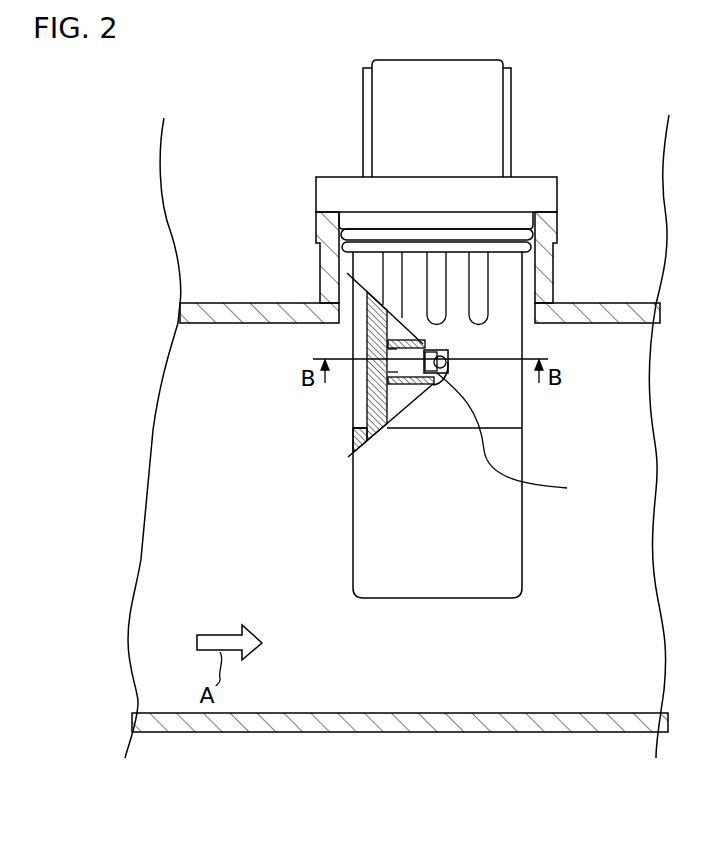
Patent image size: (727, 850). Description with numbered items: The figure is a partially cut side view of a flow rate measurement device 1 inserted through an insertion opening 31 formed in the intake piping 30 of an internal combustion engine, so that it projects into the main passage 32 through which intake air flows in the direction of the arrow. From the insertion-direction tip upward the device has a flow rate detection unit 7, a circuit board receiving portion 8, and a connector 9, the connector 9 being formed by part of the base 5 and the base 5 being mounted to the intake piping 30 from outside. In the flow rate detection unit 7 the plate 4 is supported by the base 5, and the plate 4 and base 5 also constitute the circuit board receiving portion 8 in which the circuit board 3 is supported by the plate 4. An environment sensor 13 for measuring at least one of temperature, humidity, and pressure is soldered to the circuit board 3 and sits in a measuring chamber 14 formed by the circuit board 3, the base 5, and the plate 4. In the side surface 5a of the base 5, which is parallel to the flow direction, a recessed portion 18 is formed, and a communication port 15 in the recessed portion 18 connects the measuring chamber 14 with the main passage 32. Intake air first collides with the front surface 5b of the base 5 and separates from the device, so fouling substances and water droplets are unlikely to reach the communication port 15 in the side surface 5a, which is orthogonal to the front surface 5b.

The flow rate measurement device 1 is at (510, 100).
The circuit board 3 is at (367, 403).
The plate 4 is at (455, 590).
The base 5 is at (527, 403).
The side surface 5a is at (505, 418).
The front surface 5b is at (352, 430).
The flow rate detection unit 7 is at (290, 430).
The circuit board receiving portion 8 is at (290, 247).
The connector 9 is at (288, 53).
The environment sensor 13 is at (387, 346).
The measuring chamber 14 is at (390, 383).
The communication port 15 is at (448, 354).
The recessed portion 18 is at (518, 439).
The intake piping 30 is at (502, 732).
The insertion opening 31 is at (532, 273).
The main passage 32 is at (307, 685).